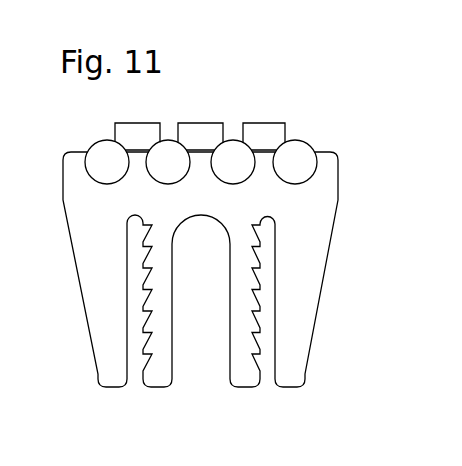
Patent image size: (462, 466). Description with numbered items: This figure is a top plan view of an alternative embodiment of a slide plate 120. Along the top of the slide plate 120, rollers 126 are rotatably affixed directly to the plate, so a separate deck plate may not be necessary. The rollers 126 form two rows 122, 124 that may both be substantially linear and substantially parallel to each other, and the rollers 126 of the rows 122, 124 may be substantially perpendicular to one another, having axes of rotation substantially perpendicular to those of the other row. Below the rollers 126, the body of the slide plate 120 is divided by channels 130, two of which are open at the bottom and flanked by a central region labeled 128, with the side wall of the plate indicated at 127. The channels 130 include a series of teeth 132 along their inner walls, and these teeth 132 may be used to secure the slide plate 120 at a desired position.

The slide plate 120 is at (328, 105).
The row 122 is at (356, 146).
The row 124 is at (356, 181).
The rollers 126 is at (232, 140).
The body 127 is at (303, 240).
The central slot 128 is at (217, 281).
The channels 130 is at (132, 400).
The teeth 132 is at (253, 306).